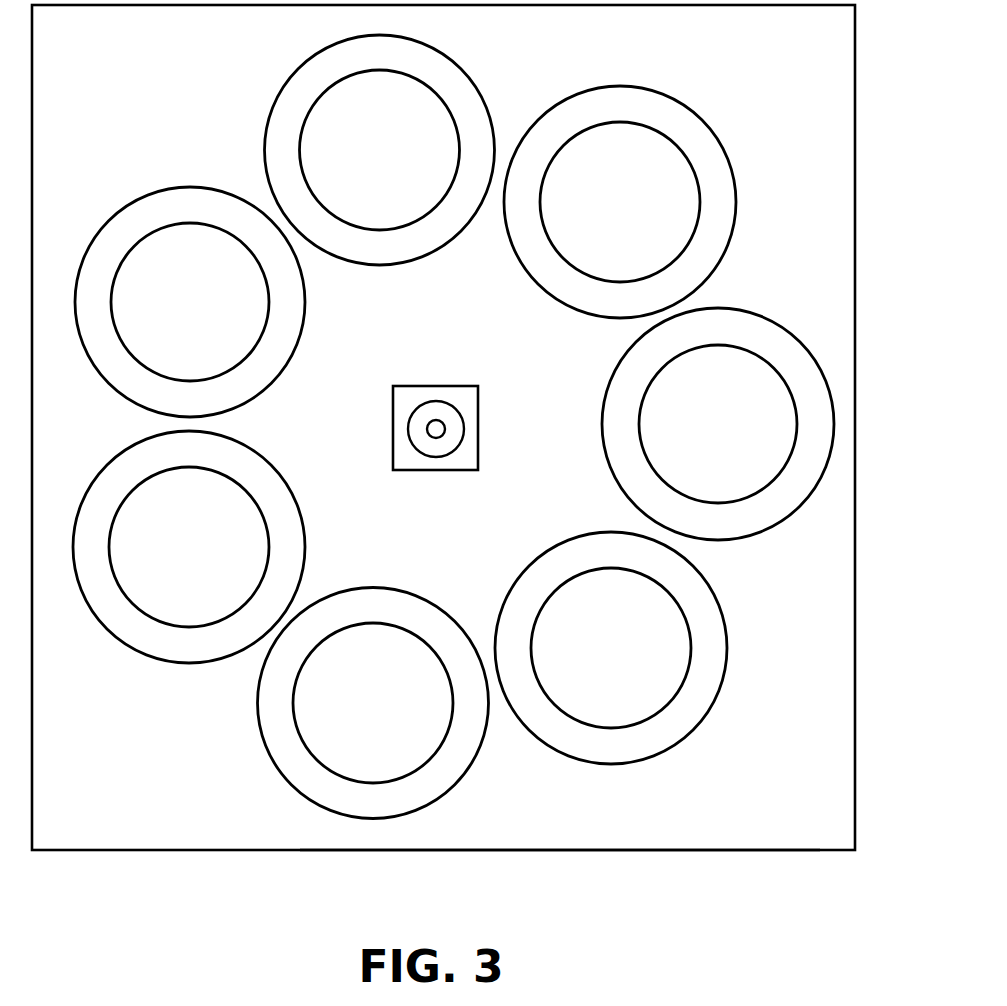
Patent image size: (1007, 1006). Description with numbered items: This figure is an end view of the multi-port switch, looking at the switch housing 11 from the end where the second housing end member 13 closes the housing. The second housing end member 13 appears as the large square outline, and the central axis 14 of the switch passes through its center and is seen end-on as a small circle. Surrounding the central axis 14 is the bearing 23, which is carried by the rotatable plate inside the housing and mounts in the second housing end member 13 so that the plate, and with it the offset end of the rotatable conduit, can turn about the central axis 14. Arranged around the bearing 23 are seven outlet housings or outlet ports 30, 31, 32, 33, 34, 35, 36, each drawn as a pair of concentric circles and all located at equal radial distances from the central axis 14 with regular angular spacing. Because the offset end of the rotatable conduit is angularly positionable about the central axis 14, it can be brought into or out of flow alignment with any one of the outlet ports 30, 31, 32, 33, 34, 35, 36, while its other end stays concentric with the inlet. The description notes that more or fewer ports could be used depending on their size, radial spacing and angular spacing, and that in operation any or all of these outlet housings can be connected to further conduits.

The switch housing 11 is at (857, 728).
The second housing end member 13 is at (745, 852).
The central axis 14 is at (434, 436).
The bearing 23 is at (480, 406).
The outlet port 30 is at (680, 741).
The outlet port 31 is at (458, 778).
The outlet port 32 is at (148, 657).
The outlet port 33 is at (302, 330).
The outlet port 34 is at (423, 258).
The outlet port 35 is at (724, 252).
The outlet port 36 is at (806, 500).